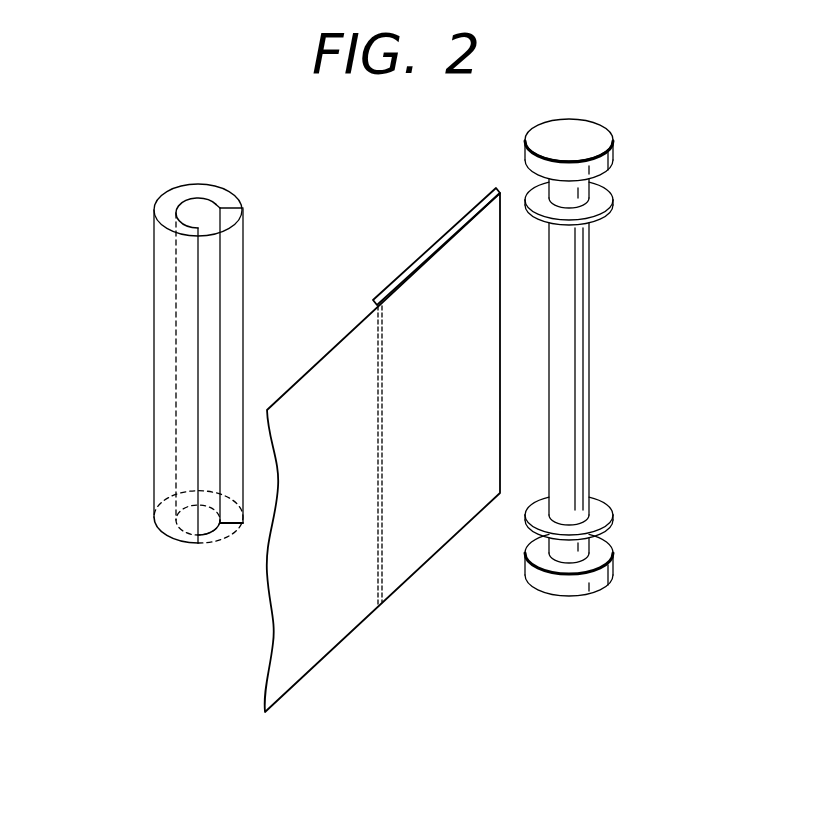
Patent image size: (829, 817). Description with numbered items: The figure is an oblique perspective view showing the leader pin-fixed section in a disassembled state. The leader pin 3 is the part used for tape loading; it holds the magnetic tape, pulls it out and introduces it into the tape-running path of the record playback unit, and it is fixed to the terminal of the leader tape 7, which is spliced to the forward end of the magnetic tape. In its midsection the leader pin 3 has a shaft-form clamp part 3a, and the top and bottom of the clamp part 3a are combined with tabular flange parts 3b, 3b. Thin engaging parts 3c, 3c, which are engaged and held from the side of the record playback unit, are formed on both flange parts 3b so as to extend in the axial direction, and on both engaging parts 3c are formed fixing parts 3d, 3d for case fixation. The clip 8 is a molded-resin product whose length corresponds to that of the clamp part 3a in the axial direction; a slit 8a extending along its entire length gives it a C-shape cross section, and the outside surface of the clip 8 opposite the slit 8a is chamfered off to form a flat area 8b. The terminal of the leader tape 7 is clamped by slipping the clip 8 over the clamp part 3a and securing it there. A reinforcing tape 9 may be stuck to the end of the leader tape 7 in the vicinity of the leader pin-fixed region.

The leader pin 3 is at (579, 371).
The clamp part 3a is at (580, 357).
The flange part 3b is at (603, 215).
The engaging part 3c is at (580, 197).
The fixing part 3d is at (543, 133).
The leader tape 7 is at (350, 347).
The clip 8 is at (202, 348).
The slit 8a is at (210, 358).
The flat area 8b is at (168, 197).
The reinforcing tape 9 is at (437, 242).